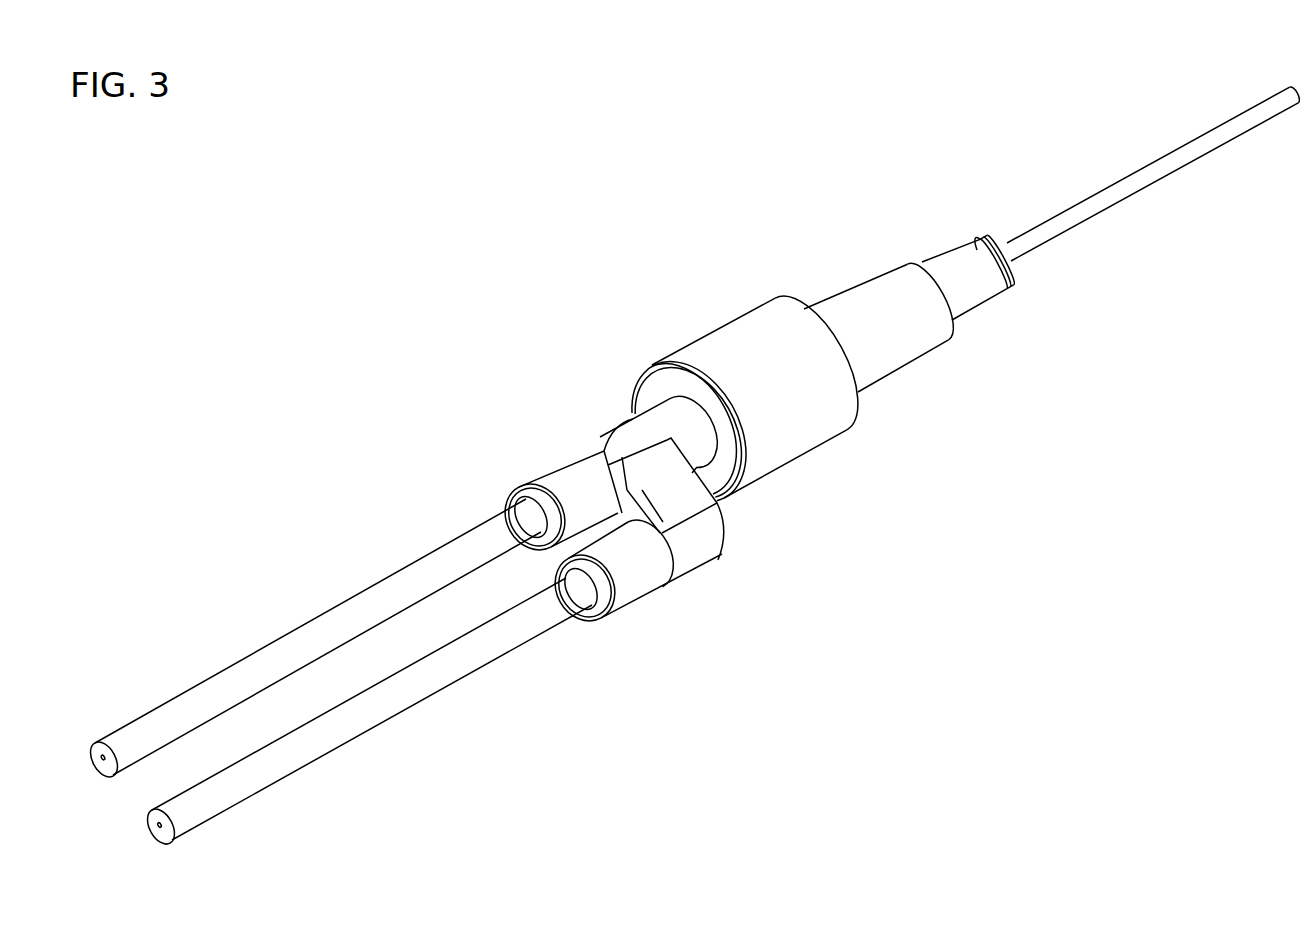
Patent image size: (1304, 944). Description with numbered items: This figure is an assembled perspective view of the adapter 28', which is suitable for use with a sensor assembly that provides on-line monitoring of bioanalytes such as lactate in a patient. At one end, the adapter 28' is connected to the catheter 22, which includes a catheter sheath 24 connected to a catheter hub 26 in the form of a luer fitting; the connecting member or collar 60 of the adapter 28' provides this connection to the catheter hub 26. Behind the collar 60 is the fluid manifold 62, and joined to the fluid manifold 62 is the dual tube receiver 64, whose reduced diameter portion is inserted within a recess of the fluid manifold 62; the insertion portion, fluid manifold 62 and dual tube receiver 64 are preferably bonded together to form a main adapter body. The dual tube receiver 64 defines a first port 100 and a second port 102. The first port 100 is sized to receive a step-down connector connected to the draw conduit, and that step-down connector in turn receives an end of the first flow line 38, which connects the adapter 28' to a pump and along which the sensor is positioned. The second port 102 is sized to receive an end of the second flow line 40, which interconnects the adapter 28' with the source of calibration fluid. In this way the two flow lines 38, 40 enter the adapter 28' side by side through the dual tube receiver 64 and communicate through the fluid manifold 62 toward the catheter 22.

The catheter 22 is at (997, 225).
The catheter sheath 24 is at (1107, 208).
The catheter hub 26 is at (885, 282).
The adapter 28' is at (921, 529).
The first flow line 38 is at (327, 612).
The second flow line 40 is at (405, 710).
The connecting member or collar 60 is at (715, 333).
The fluid manifold 62 is at (702, 565).
The dual tube receiver 64 is at (652, 590).
The first port 100 is at (510, 503).
The second port 102 is at (587, 614).